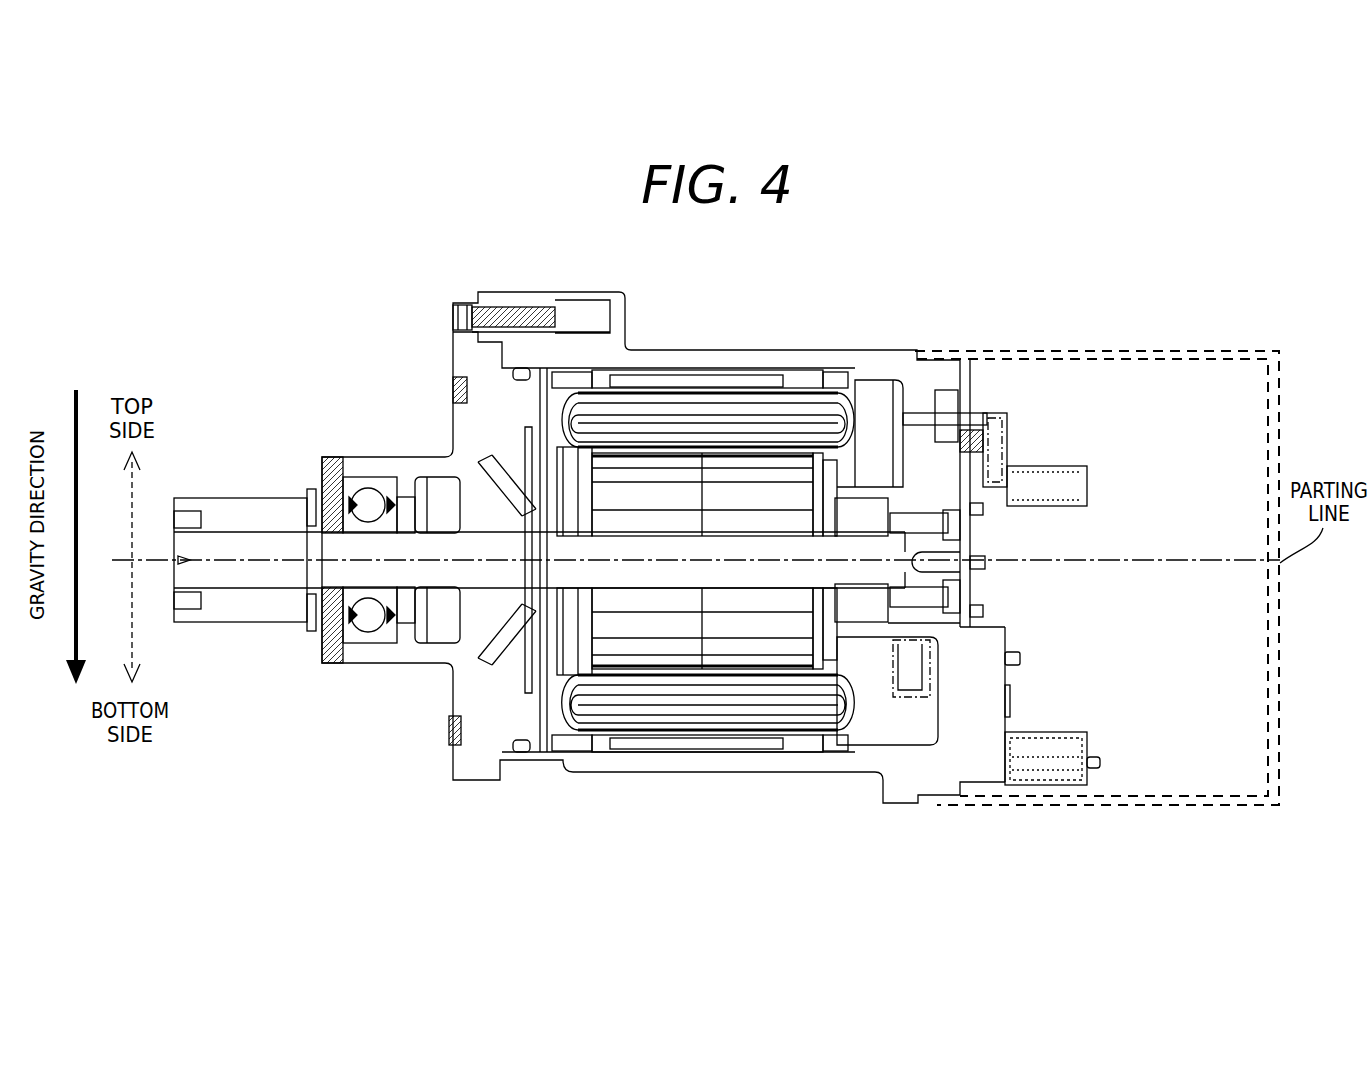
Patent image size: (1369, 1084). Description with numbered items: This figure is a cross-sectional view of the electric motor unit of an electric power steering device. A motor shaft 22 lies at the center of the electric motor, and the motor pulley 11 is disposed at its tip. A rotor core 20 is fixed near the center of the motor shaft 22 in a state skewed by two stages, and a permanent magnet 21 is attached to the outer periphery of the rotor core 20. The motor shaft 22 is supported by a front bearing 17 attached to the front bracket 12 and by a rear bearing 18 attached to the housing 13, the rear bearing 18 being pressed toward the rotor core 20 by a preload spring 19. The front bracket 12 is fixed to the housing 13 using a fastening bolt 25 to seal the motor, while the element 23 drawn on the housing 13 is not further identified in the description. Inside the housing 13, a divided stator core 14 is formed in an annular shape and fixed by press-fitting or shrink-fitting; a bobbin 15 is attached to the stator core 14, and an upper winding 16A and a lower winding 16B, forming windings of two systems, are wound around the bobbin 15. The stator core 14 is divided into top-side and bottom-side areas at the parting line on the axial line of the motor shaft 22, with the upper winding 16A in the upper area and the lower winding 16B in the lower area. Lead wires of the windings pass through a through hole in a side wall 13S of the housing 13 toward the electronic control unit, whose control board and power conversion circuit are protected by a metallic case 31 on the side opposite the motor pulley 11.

The motor pulley 11 is at (230, 511).
The front bracket 12 is at (364, 463).
The housing 13 is at (745, 352).
The side wall 13S is at (983, 675).
The stator core 14 is at (627, 380).
The bobbin 15 is at (865, 398).
The upper winding 16A is at (775, 412).
The lower winding 16B is at (738, 712).
The front bearing 17 is at (364, 622).
The rear bearing 18 is at (960, 600).
The preload spring 19 is at (945, 514).
The rotor core 20 is at (672, 630).
The permanent magnet 21 is at (763, 660).
The motor shaft 22 is at (211, 567).
The bolt 23 is at (448, 733).
The fastening bolt 25 is at (450, 314).
The case 31 is at (1107, 351).